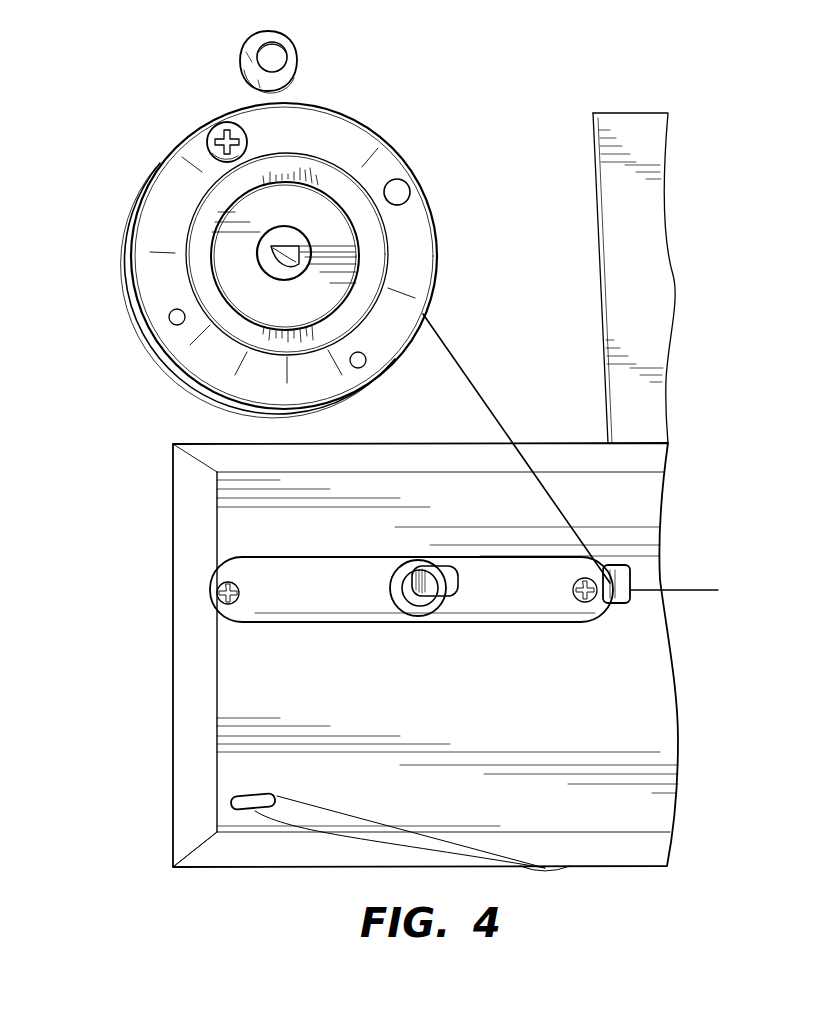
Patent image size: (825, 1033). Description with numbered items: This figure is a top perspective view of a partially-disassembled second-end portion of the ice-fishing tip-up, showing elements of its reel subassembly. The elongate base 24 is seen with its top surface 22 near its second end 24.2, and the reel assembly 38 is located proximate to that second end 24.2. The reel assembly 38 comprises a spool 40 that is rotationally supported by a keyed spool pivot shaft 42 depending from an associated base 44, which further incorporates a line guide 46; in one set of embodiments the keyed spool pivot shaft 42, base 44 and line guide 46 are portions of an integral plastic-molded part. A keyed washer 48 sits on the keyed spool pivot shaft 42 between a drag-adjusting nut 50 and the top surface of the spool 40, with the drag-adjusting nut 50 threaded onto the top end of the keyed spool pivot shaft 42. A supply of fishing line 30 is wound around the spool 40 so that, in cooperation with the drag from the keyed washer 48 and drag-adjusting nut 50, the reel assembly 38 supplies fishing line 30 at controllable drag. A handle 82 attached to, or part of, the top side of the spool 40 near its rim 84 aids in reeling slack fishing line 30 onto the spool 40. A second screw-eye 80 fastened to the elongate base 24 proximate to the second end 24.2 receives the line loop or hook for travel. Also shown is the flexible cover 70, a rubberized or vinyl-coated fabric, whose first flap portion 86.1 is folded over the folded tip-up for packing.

The top surface 22 is at (350, 683).
The elongate base 24 is at (447, 623).
The second end 24.2 is at (213, 885).
The fishing line 30 is at (465, 369).
The reel assembly 38 is at (308, 231).
The spool 40 is at (393, 111).
The keyed spool pivot shaft 42 is at (442, 577).
The base 44 is at (273, 584).
The line guide 46 is at (626, 592).
The keyed washer 48 is at (267, 267).
The drag-adjusting nut 50 is at (292, 52).
The flexible cover 70 is at (702, 254).
The first flap portion 86.1 is at (665, 138).
The second screw-eye 80 is at (243, 796).
The handle 82 is at (218, 130).
The rim 84 is at (182, 183).